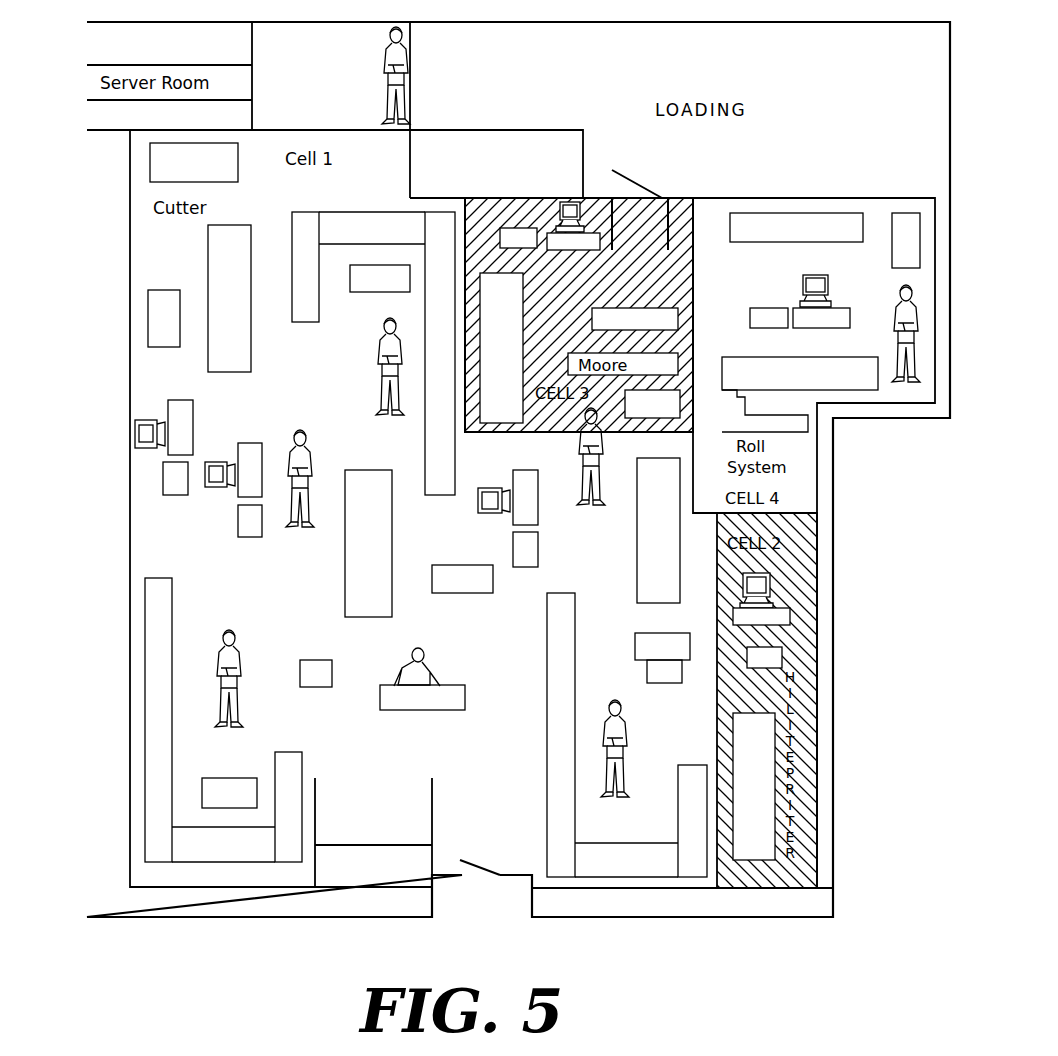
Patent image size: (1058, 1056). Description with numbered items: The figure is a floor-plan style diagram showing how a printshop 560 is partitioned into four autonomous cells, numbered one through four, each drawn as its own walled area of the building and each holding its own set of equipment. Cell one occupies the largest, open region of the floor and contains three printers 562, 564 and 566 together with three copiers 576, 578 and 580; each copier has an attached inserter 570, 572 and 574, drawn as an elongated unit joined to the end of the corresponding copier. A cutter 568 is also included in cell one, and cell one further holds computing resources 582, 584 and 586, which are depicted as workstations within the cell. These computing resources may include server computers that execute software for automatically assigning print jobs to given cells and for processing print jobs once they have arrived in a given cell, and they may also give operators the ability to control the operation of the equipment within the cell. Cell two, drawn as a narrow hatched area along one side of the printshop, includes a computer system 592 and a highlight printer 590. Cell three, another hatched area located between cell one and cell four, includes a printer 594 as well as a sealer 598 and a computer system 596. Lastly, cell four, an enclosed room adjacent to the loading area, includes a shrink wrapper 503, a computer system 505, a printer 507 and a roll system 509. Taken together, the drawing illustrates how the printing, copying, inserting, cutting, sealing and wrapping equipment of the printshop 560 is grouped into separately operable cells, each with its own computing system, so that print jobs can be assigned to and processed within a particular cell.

The printshop 560 is at (112, 917).
The printer 562 is at (251, 365).
The printer 564 is at (343, 562).
The printer 566 is at (636, 547).
The cutter 568 is at (218, 182).
The inserter 570 is at (305, 322).
The inserter 572 is at (302, 758).
The inserter 574 is at (700, 767).
The copier 576 is at (437, 495).
The copier 578 is at (172, 610).
The copier 580 is at (555, 628).
The computing resource 582 is at (152, 420).
The computing resource 584 is at (222, 460).
The computing resource 586 is at (493, 486).
The highlight printer 590 is at (733, 722).
The computer system 592 is at (775, 600).
The printer 594 is at (525, 290).
The computer system 596 is at (563, 198).
The sealer 598 is at (659, 307).
The shrink wrapper 503 is at (778, 243).
The computer system 505 is at (862, 277).
The printer 507 is at (768, 357).
The roll system 509 is at (800, 426).